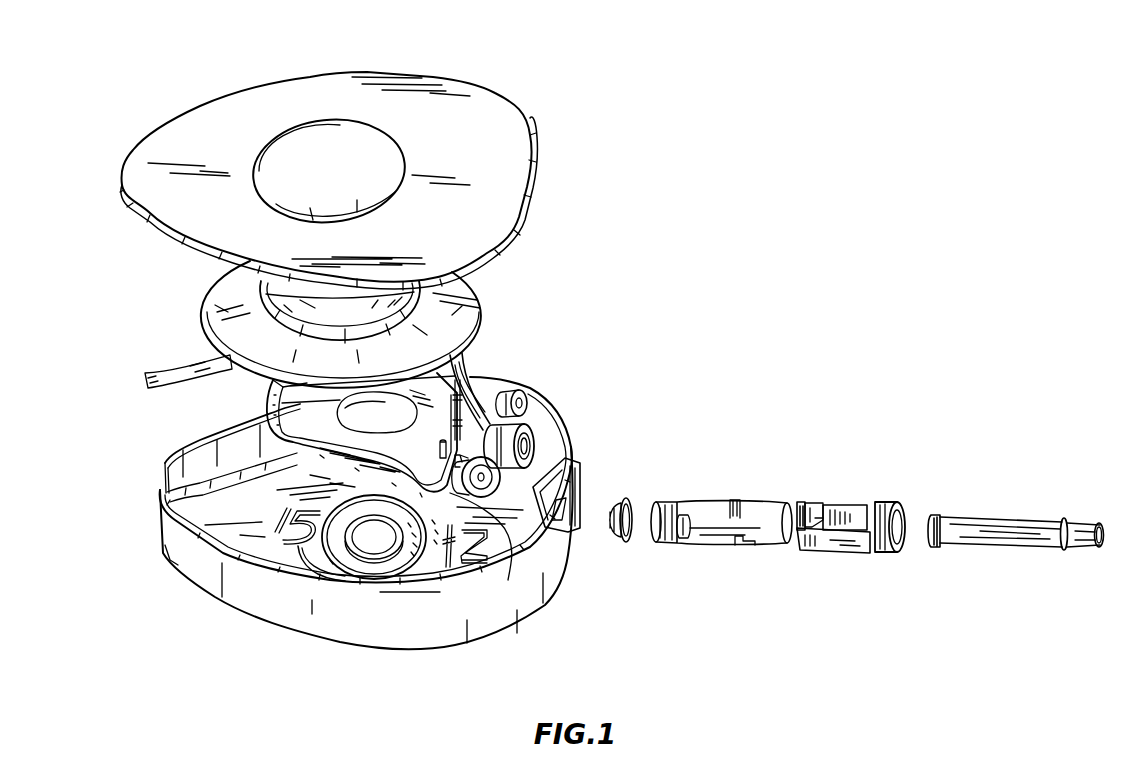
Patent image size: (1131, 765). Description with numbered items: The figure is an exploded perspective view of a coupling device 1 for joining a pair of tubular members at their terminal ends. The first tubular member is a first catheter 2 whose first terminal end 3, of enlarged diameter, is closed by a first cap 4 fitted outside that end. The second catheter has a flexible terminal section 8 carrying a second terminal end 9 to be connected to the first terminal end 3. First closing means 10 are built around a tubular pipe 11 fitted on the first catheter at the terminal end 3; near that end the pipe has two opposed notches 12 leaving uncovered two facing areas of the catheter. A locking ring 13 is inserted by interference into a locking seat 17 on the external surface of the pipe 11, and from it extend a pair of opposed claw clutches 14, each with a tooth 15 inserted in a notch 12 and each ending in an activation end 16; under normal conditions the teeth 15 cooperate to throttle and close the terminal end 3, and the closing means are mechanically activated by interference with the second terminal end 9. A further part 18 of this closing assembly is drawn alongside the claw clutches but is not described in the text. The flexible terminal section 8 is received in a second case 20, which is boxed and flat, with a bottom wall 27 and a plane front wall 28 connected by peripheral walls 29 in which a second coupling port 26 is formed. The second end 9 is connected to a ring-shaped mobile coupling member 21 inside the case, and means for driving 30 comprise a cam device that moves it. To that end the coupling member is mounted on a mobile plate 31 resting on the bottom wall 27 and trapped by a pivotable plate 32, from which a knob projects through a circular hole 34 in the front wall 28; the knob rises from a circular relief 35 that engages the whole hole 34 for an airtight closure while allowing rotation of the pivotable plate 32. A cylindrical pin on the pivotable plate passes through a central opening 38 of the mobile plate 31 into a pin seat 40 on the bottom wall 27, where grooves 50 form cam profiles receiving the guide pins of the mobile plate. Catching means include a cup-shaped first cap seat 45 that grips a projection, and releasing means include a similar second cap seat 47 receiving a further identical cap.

The coupling device 1 is at (730, 244).
The first catheter 2 is at (1035, 543).
The first terminal end 3 is at (950, 549).
The first cap 4 is at (631, 499).
The flexible terminal section 8 is at (467, 359).
The second terminal end 9 is at (484, 408).
The first closing means 10 is at (875, 636).
The tubular pipe 11 is at (709, 548).
The notches 12 is at (680, 541).
The locking ring 13 is at (891, 504).
The claw clutches 14 is at (851, 506).
The tooth 15 is at (818, 504).
The activation end 16 is at (798, 511).
The locking seat 17 is at (753, 549).
The lower housing part 18 is at (859, 554).
The second case 20 is at (95, 419).
The mobile coupling member 21 is at (538, 419).
The second coupling port 26 is at (570, 528).
The bottom wall 27 is at (154, 518).
The front wall 28 is at (448, 120).
The peripheral walls 29 is at (424, 631).
The means for driving 30 is at (361, 606).
The mobile plate 31 is at (207, 438).
The pivotable plate 32 is at (480, 305).
The circular hole 34 is at (307, 148).
The circular relief 35 is at (300, 298).
The central opening 38 is at (268, 408).
The pin seat 40 is at (327, 560).
The first cap seat 45 is at (531, 411).
The second cap seat 47 is at (508, 580).
The grooves 50 is at (311, 578).